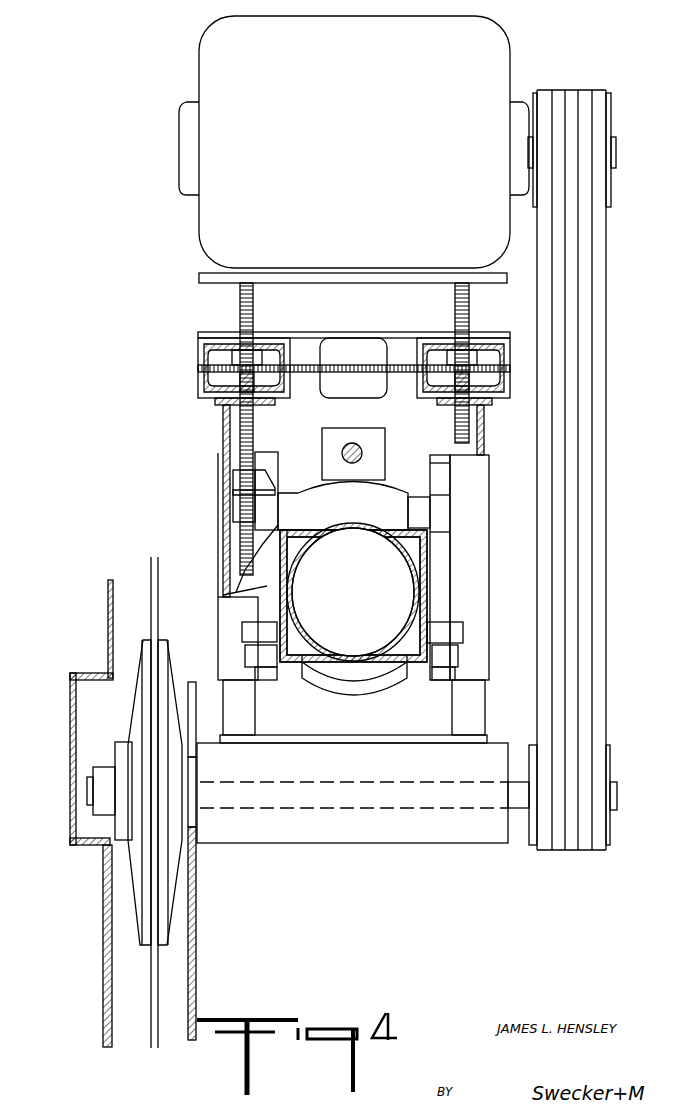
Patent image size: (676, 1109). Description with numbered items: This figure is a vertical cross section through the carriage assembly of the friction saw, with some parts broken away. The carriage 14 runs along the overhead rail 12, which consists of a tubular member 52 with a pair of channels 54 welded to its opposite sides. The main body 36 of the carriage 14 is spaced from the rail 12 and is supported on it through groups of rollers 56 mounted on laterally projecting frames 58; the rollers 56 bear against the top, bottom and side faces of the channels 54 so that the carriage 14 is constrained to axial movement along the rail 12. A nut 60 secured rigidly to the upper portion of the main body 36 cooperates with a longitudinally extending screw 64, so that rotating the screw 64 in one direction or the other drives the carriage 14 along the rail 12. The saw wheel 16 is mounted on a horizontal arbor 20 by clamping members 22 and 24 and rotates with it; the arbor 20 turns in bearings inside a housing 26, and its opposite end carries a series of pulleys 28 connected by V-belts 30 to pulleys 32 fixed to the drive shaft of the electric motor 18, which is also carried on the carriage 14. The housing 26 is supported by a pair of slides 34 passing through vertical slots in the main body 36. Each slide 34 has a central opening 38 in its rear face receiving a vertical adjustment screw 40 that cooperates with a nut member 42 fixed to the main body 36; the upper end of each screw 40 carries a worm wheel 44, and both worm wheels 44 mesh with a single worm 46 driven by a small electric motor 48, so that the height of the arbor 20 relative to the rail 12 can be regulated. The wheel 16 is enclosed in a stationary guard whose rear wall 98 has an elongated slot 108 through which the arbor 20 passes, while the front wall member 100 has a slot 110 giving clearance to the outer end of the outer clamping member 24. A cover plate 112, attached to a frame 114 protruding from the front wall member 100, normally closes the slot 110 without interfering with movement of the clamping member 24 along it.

The overhead rail 12 is at (334, 675).
The carriage 14 is at (213, 635).
The saw wheel 16 is at (158, 1012).
The electric motor 18 is at (370, 154).
The arbor 20 is at (376, 805).
The clamping member 22 is at (164, 945).
The outer clamping member 24 is at (144, 945).
The housing 26 is at (392, 843).
The pulleys 28 is at (617, 746).
The V-belts 30 is at (570, 277).
The pulleys 32 is at (620, 116).
The slides 34 is at (226, 410).
The main body 36 is at (280, 458).
The opening 38 is at (258, 430).
The adjustment screw 40 is at (255, 404).
The nut member 42 is at (238, 487).
The worm wheel 44 is at (208, 370).
The worm 46 is at (296, 373).
The small electric motor 48 is at (366, 379).
The tubular member 52 is at (357, 530).
The channels 54 is at (415, 565).
The rollers 56 is at (418, 497).
The frames 58 is at (430, 476).
The nut 60 is at (391, 432).
The screw 64 is at (362, 456).
The rear wall 98 is at (196, 886).
The front wall member 100 is at (108, 608).
The elongated slot 108 is at (197, 750).
The slot 110 is at (110, 680).
The cover plate 112 is at (70, 708).
The frame 114 is at (72, 673).